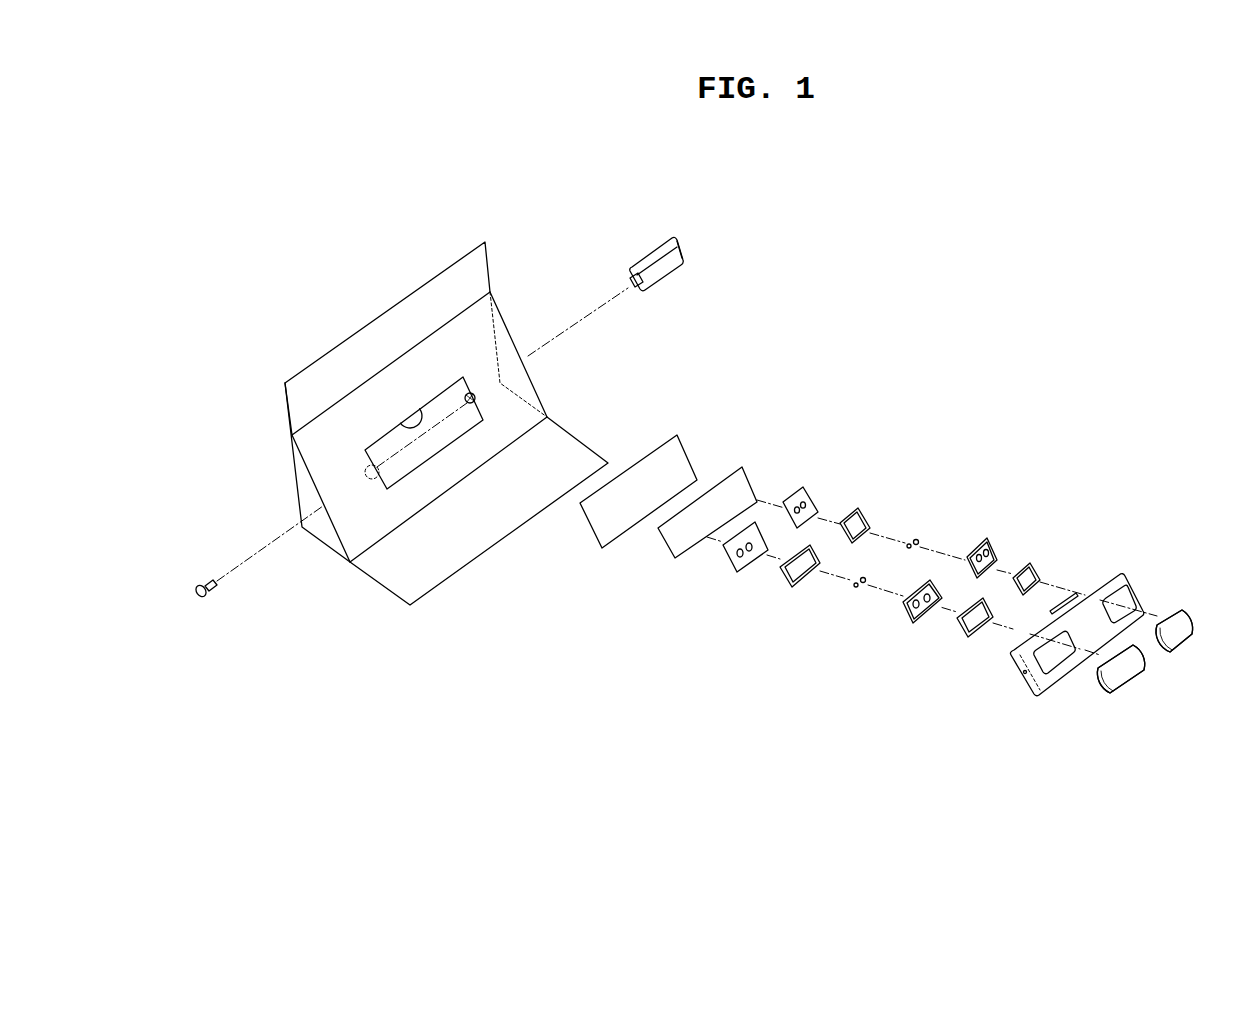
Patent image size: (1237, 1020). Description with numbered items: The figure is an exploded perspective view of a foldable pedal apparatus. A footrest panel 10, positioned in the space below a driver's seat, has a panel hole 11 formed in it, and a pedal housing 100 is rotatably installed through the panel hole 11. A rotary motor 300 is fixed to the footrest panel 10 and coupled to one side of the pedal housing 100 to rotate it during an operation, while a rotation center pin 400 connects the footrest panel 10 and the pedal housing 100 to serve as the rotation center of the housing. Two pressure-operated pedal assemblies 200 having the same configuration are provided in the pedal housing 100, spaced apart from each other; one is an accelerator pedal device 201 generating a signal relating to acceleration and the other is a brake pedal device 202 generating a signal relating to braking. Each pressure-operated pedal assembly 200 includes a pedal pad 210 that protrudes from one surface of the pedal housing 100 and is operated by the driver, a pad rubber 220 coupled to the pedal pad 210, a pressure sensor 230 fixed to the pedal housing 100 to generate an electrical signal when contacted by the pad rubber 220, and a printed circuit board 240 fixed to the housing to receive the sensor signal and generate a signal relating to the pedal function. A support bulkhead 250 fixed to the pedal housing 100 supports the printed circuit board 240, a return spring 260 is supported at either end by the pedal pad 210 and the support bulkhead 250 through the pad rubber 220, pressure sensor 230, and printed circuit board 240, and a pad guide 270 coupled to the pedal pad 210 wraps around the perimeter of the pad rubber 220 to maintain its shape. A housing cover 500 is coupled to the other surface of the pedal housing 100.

The footrest panel 10 is at (320, 457).
The panel hole 11 is at (405, 426).
The pedal housing 100 is at (1123, 575).
The pressure-operated pedal assembly 200 is at (1116, 656).
The accelerator pedal device 201 is at (1180, 597).
The brake pedal device 202 is at (1096, 693).
The pedal pad 210 is at (1183, 652).
The pad rubber 220 is at (985, 538).
The pressure sensor 230 is at (860, 510).
The printed circuit board 240 is at (805, 490).
The support bulkhead 250 is at (737, 485).
The return spring 260 is at (915, 542).
The pad guide 270 is at (1032, 565).
The rotary motor 300 is at (660, 245).
The rotation center pin 400 is at (211, 581).
The housing cover 500 is at (605, 520).